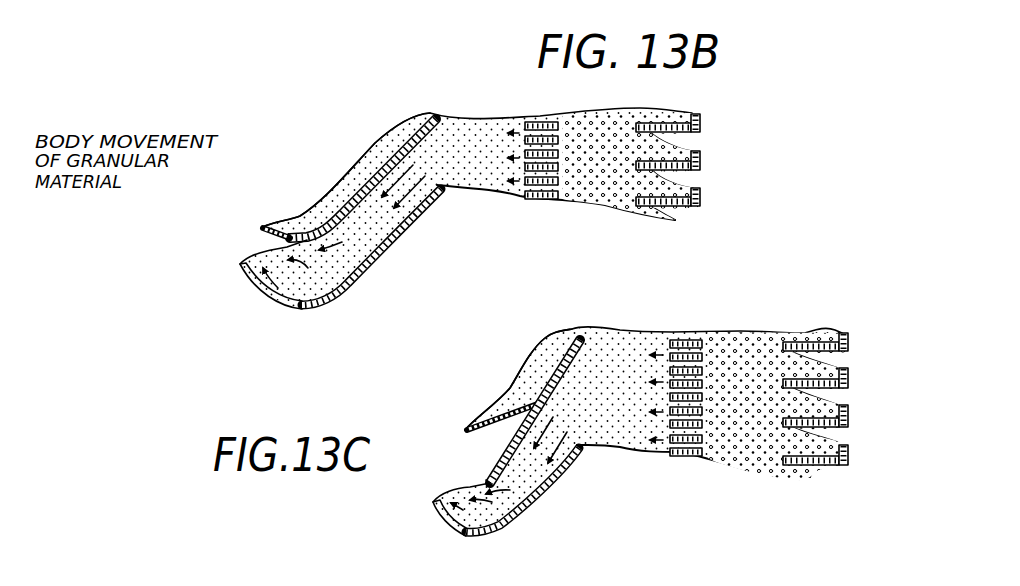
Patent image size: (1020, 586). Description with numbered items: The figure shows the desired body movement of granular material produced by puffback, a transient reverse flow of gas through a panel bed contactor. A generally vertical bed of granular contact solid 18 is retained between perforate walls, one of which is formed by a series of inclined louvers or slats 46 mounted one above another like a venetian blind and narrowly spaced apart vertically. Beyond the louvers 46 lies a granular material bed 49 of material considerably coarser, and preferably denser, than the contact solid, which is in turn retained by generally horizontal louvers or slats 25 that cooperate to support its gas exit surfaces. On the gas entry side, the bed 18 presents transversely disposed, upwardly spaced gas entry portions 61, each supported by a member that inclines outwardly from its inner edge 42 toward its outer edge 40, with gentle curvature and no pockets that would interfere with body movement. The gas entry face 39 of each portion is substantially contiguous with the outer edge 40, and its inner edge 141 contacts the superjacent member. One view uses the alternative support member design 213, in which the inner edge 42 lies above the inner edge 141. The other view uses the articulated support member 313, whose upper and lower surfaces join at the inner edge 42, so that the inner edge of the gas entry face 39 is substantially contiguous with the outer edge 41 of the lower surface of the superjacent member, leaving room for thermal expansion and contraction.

In FIG. 13B, the bed of granular contact solid 18 is at (472, 172).
In FIG. 13C, the bed of granular contact solid 18 is at (617, 440).
In FIG. 13B, the louvers or slats 25 is at (701, 124).
In FIG. 13C, the louvers or slats 25 is at (850, 378).
In FIG. 13B, the gas entry surface 39 is at (258, 252).
In FIG. 13C, the gas entry surface 39 is at (462, 490).
In FIG. 13B, the outer edge 40 is at (240, 262).
In FIG. 13C, the outer edge 40 is at (433, 500).
In FIG. 13C, the outer edge of lower surface 41 is at (487, 487).
In FIG. 13B, the inner edge 42 is at (437, 113).
In FIG. 13C, the inner edge 42 is at (585, 343).
In FIG. 13B, the inclined louvers or slats 46 is at (540, 197).
In FIG. 13C, the inclined louvers or slats 46 is at (683, 342).
In FIG. 13B, the granular material bed 49 is at (603, 177).
In FIG. 13C, the granular material bed 49 is at (743, 447).
In FIG. 13B, the gas entry portions 61 is at (323, 297).
In FIG. 13C, the gas entry portions 61 is at (530, 490).
In FIG. 13B, the inner edge of gas entry face 141 is at (307, 233).
In FIG. 13B, the alternative support member design 213 is at (367, 187).
In FIG. 13C, the support member 313 is at (525, 397).